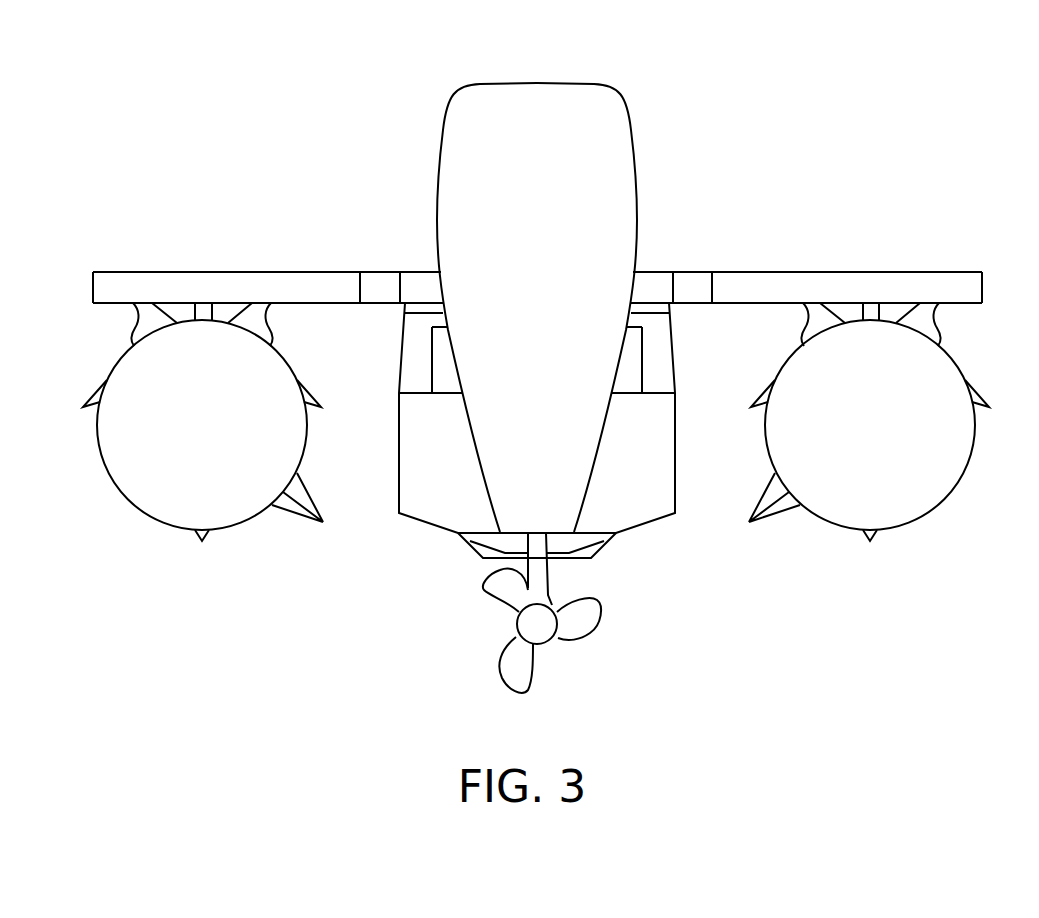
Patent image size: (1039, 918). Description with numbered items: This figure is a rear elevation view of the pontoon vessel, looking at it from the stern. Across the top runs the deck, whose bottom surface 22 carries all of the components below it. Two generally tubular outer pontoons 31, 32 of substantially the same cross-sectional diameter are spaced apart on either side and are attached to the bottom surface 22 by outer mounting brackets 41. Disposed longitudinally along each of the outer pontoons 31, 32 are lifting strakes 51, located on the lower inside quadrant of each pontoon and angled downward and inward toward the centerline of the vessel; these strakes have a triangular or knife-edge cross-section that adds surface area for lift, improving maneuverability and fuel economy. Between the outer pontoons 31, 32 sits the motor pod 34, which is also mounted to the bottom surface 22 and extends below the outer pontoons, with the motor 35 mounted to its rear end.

The bottom surface 22 is at (743, 319).
The outer pontoon 31 is at (854, 441).
The outer pontoon 32 is at (186, 441).
The motor pod 34 is at (428, 505).
The motor 35 is at (533, 93).
The outer mounting bracket 41 is at (150, 323).
The lifting strake 51 is at (290, 508).